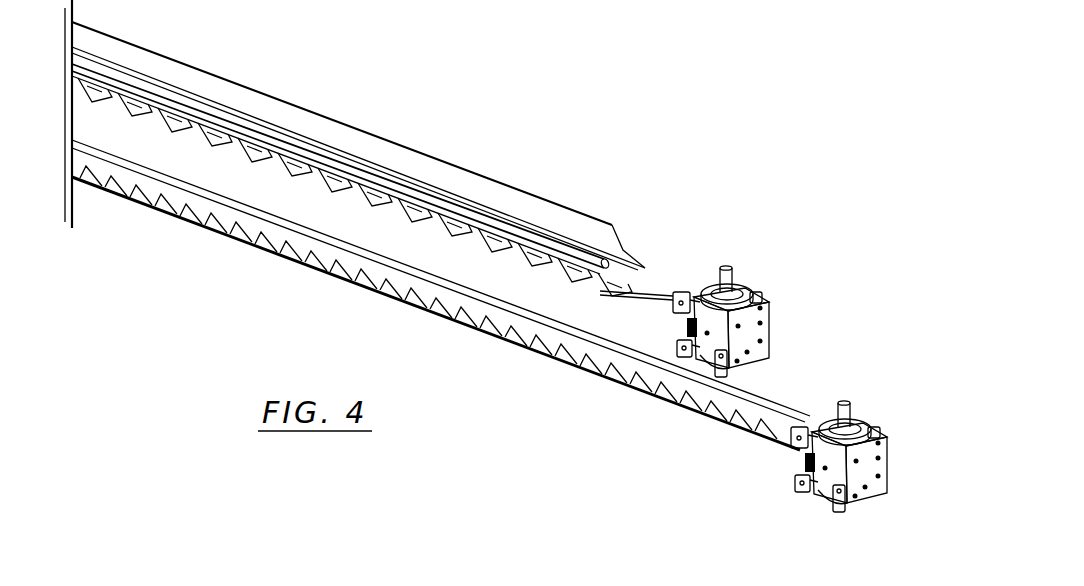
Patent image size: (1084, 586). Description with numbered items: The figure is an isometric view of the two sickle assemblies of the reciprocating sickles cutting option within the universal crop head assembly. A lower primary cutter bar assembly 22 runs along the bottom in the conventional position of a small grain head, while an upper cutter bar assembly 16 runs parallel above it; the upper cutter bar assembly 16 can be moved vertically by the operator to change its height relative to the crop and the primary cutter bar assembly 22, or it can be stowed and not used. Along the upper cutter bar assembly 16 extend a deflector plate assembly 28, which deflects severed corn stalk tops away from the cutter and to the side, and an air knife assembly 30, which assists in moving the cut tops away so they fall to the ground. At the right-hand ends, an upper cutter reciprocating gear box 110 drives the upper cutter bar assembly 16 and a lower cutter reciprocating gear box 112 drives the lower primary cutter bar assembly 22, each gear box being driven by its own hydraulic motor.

The upper cutter bar assembly 16 is at (235, 164).
The lower primary cutter bar assembly 22 is at (318, 268).
The deflector plate assembly 28 is at (488, 188).
The air knife assembly 30 is at (577, 247).
The upper cutter reciprocating gear box 110 is at (766, 292).
The lower cutter reciprocating gear box 112 is at (877, 422).